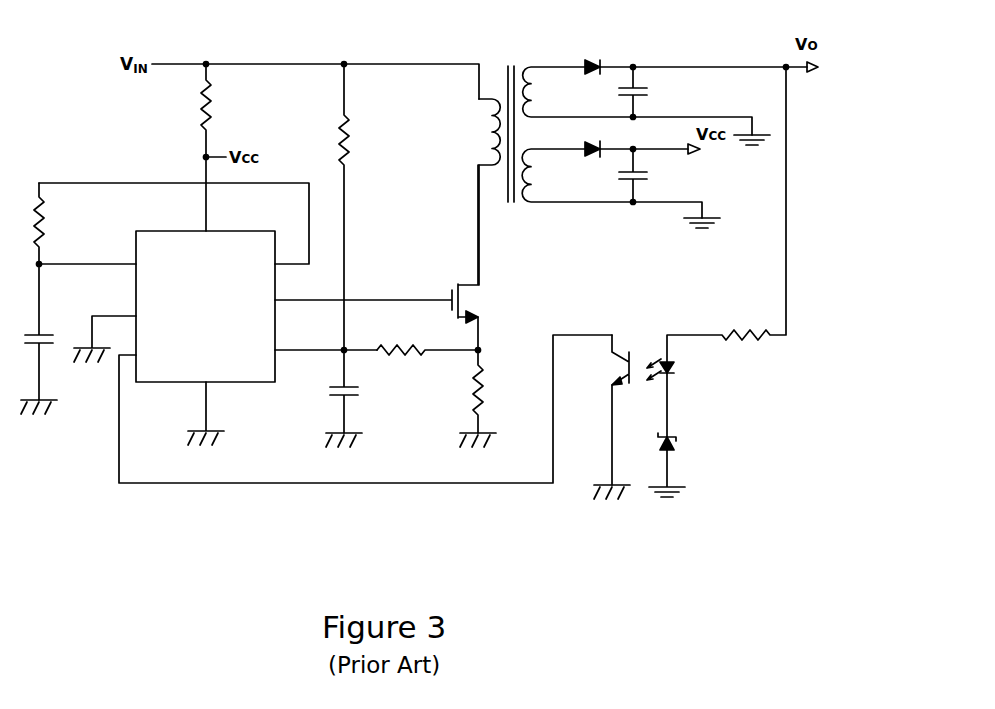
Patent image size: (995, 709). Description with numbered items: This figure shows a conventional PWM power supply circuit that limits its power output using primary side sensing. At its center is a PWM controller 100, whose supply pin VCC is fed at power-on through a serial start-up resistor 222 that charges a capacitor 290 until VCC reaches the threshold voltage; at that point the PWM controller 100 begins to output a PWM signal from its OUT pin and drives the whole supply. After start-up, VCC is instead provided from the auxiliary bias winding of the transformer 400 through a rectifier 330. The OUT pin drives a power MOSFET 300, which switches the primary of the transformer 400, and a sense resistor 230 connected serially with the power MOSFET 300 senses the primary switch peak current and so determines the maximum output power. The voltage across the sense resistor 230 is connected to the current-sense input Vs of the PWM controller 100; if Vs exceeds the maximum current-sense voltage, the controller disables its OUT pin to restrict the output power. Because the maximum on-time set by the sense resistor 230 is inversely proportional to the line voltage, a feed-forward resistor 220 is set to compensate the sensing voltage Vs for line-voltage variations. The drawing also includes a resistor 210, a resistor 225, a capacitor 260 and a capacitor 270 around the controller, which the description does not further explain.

The PWM controller 100 is at (172, 229).
The resistor 210 is at (50, 238).
The feed-forward resistor 220 is at (356, 150).
The serial start-up resistor 222 is at (217, 117).
The resistor 225 is at (401, 357).
The sense resistor 230 is at (486, 411).
The capacitor 260 is at (47, 322).
The capacitor 270 is at (360, 402).
The capacitor 290 is at (656, 173).
The power MOSFET 300 is at (488, 311).
The rectifier 330 is at (588, 161).
The transformer 400 is at (499, 67).